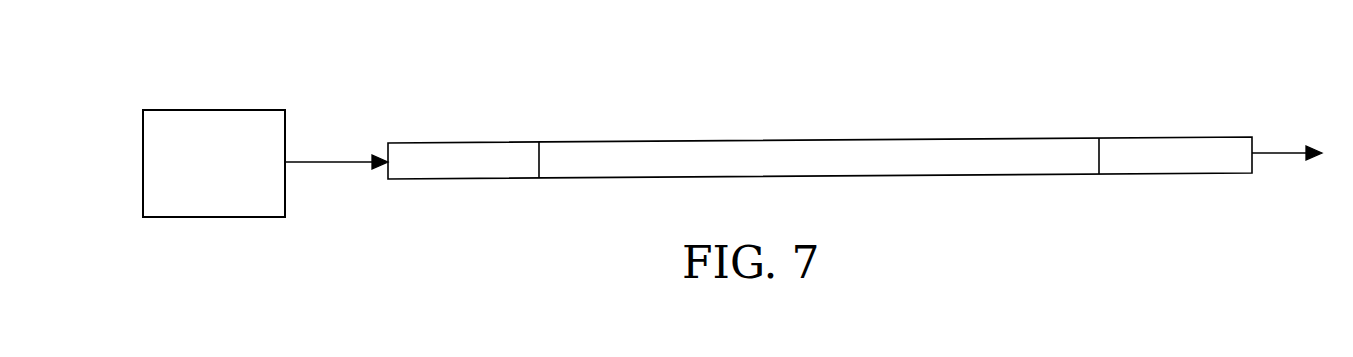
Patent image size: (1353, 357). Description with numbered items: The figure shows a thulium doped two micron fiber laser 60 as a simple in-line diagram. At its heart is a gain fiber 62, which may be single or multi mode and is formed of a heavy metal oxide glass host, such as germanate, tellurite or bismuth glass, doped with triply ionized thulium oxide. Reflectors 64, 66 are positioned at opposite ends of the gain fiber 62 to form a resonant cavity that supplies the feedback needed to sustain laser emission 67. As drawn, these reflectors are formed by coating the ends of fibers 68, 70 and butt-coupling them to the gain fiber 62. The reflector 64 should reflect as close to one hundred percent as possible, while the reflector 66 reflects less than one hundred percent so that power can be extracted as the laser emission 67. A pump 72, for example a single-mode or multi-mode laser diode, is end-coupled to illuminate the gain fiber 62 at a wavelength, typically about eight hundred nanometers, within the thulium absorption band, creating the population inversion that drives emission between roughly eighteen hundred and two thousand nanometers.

The fiber laser 60 is at (855, 151).
The gain fiber 62 is at (762, 140).
The reflector 64 is at (539, 120).
The reflector 66 is at (1100, 117).
The laser emission 67 is at (1275, 152).
The fiber 68 is at (505, 178).
The fiber 70 is at (1135, 173).
The pump 72 is at (237, 110).